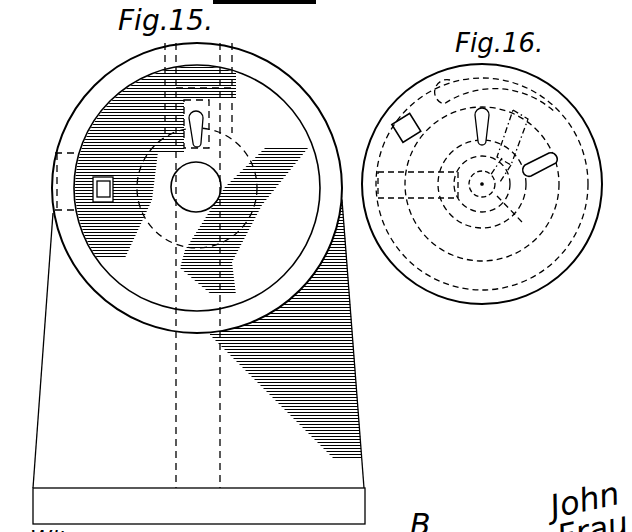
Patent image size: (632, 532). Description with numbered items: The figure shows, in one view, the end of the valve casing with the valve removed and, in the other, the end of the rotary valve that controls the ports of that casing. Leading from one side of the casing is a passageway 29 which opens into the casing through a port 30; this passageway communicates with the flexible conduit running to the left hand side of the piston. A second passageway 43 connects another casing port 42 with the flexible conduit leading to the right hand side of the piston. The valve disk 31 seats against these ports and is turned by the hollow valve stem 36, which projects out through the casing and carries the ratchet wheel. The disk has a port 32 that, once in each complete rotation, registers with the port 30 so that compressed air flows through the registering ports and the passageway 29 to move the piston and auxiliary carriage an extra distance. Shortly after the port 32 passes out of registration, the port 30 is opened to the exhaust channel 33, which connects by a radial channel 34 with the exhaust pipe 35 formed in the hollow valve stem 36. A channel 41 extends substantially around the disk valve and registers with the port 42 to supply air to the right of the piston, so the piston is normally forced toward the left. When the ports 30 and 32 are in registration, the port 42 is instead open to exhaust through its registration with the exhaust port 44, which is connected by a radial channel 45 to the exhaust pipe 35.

In FIG. 15, the passageway 29 is at (63, 163).
In FIG. 15, the port 30 is at (107, 196).
In FIG. 15, the port 42 is at (203, 117).
In FIG. 15, the passageway 43 is at (210, 44).
In FIG. 16, the valve disk 31 is at (577, 111).
In FIG. 16, the port 32 is at (405, 117).
In FIG. 16, the exhaust channel 33 is at (445, 283).
In FIG. 16, the radial channel 34 is at (444, 198).
In FIG. 16, the exhaust pipe 35 is at (488, 197).
In FIG. 16, the hollow valve stem 36 is at (504, 193).
In FIG. 16, the channel 41 is at (512, 251).
In FIG. 16, the exhaust port 44 is at (525, 120).
In FIG. 16, the radial channel 45 is at (532, 142).